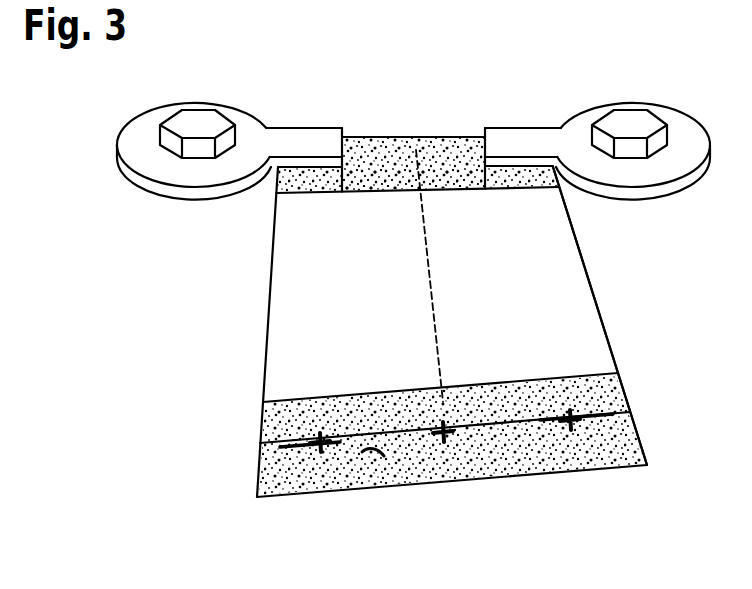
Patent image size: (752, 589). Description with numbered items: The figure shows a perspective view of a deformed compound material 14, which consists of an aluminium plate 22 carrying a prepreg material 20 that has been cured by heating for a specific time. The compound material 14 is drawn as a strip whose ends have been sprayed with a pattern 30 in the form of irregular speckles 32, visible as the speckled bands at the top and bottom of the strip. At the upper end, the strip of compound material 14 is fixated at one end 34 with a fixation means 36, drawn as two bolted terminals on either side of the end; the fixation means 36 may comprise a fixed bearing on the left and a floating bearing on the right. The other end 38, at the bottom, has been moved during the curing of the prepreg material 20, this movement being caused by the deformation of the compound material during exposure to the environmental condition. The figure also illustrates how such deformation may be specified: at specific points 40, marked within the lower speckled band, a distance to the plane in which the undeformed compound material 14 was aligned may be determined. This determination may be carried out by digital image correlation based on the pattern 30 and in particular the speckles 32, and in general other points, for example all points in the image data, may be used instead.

The compound material 14 is at (643, 302).
The prepreg material 20 is at (608, 273).
The aluminium plate 22 is at (618, 333).
The pattern 30 is at (252, 450).
The irregular speckles 32 is at (265, 417).
The one end 34 is at (443, 150).
The fixation means 36 is at (193, 125).
The other end 38 is at (376, 458).
The specific points 40 is at (330, 445).